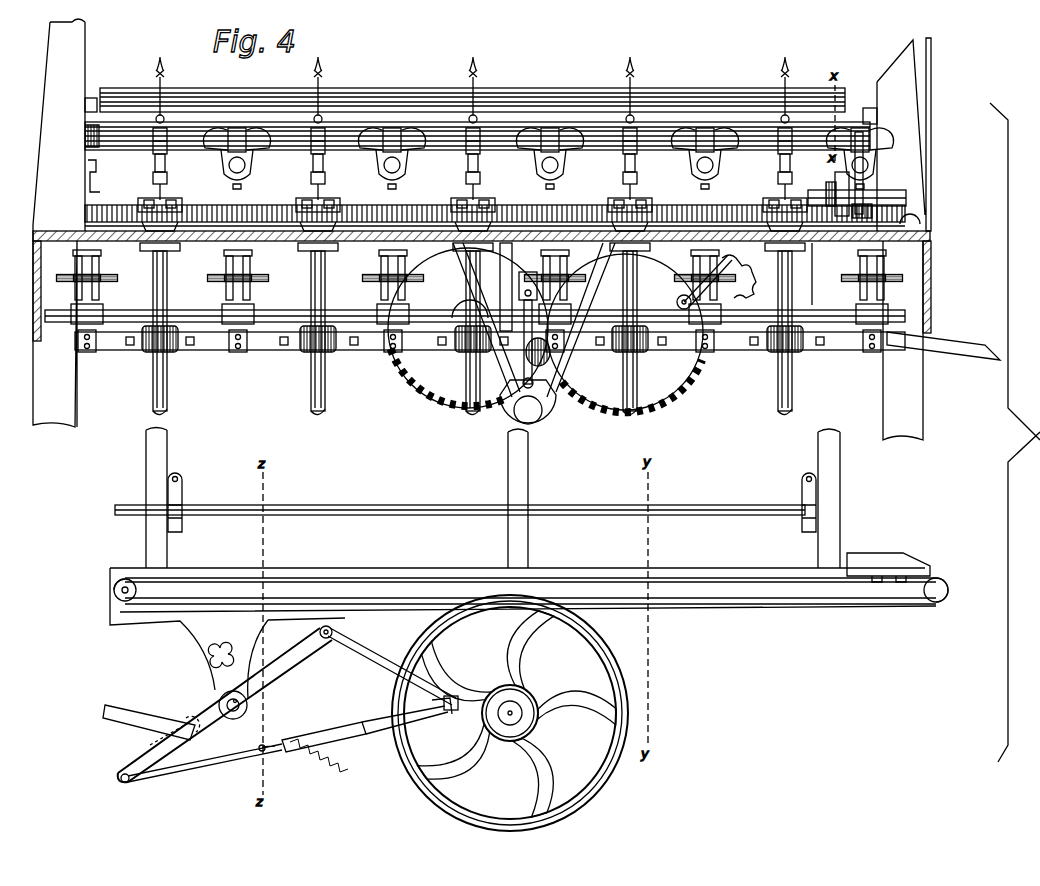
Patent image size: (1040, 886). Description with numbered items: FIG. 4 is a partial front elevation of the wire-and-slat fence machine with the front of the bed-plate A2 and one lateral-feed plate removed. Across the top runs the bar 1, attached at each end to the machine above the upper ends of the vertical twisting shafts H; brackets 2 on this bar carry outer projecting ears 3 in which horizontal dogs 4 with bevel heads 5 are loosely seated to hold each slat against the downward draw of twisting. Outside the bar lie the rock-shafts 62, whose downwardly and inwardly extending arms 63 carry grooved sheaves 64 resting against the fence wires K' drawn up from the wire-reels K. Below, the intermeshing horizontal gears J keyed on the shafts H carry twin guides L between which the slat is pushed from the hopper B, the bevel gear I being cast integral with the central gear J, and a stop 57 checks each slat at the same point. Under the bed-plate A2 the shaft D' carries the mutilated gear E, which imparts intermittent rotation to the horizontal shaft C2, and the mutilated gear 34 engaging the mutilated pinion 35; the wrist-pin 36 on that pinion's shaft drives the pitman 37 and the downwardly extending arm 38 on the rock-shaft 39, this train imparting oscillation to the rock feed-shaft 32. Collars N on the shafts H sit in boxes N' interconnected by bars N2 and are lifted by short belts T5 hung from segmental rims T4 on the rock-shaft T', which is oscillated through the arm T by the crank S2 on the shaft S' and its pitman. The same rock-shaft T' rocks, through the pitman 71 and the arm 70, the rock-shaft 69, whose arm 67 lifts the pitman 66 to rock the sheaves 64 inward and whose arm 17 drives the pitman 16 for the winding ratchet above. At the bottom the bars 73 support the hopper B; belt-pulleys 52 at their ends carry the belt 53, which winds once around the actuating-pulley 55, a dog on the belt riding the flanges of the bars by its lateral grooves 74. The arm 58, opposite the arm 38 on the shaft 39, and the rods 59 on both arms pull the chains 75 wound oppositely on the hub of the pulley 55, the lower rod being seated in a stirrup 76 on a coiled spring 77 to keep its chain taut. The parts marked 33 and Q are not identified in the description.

The bar 1 is at (668, 125).
The brackets 2 is at (262, 134).
The ears 3 is at (222, 152).
The dogs 4 is at (246, 165).
The bevel heads 5 is at (548, 172).
The pitman 16 is at (930, 150).
The arm 17 is at (913, 214).
The rock feed-shaft 32 is at (460, 499).
The rod bracket 33 is at (182, 500).
The mutilated gear 34 is at (684, 280).
The mutilated pinion 35 is at (739, 279).
The wrist-pin 36 is at (677, 301).
The pitman 37 is at (551, 531).
The arm 38 is at (175, 733).
The rock-shaft 39 is at (248, 705).
The belt-pulleys 52 is at (130, 590).
The belt 53 is at (380, 598).
The actuating-pulley 55 is at (596, 656).
The stop 57 is at (96, 190).
The arm 58 is at (225, 705).
The rods 59 is at (378, 658).
The rock-shafts 62 is at (420, 132).
The arms 63 is at (152, 156).
The sheaves 64 is at (168, 168).
The pitman 66 is at (864, 172).
The arm 67 is at (870, 190).
The rock-shaft 69 is at (884, 208).
The arm 70 is at (834, 182).
The pitman 71 is at (826, 274).
The bars 73 is at (329, 620).
The grooves 74 is at (932, 570).
The chains 75 is at (436, 726).
The stirrup 76 is at (367, 735).
The coiled spring 77 is at (220, 763).
The hopper B is at (674, 612).
The vertical shafts H is at (466, 418).
The bevel horizontal gear I is at (508, 210).
The horizontal gears J is at (263, 194).
The twin guides L is at (172, 185).
The wires K' is at (179, 180).
The wire-reels K is at (339, 363).
The arm T is at (480, 301).
The segmental rim T4 is at (250, 278).
The short belts T5 is at (250, 254).
The rock-shaft T' is at (290, 289).
The collars N is at (490, 350).
The boxes N' is at (557, 359).
The bars N2 is at (258, 340).
The horizontal shaft D' is at (475, 328).
The bed-plate A2 is at (376, 243).
The main gear Q is at (468, 328).
The horizontal shaft C2 is at (460, 308).
The mutilated gear E is at (664, 372).
The crank S2 is at (546, 416).
The shaft S' is at (528, 412).